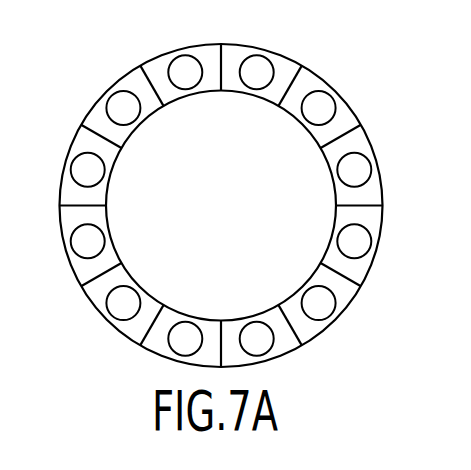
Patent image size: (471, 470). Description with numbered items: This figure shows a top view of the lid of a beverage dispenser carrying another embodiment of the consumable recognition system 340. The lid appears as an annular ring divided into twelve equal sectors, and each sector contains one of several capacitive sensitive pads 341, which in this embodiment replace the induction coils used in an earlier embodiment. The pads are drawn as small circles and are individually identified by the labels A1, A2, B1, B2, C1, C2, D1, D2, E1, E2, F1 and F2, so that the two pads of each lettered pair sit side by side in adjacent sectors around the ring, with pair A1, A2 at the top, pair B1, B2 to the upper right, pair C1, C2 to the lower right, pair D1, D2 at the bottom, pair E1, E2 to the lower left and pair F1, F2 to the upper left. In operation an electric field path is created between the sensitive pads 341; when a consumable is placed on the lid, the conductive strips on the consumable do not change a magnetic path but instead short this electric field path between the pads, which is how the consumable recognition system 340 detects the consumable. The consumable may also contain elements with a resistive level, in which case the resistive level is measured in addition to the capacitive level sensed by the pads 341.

The consumable recognition system 340 is at (138, 52).
The capacitive sensitive pads 341 is at (221, 190).
The Hall sensor A1 is at (185, 72).
The Hall sensor A2 is at (257, 72).
The Hall sensor B1 is at (319, 108).
The Hall sensor B2 is at (354, 170).
The Hall sensor C1 is at (354, 241).
The Hall sensor C2 is at (319, 303).
The Hall sensor D1 is at (257, 339).
The Hall sensor D2 is at (185, 339).
The Hall sensor E1 is at (123, 303).
The Hall sensor E2 is at (88, 241).
The Hall sensor F1 is at (88, 170).
The Hall sensor F2 is at (123, 108).